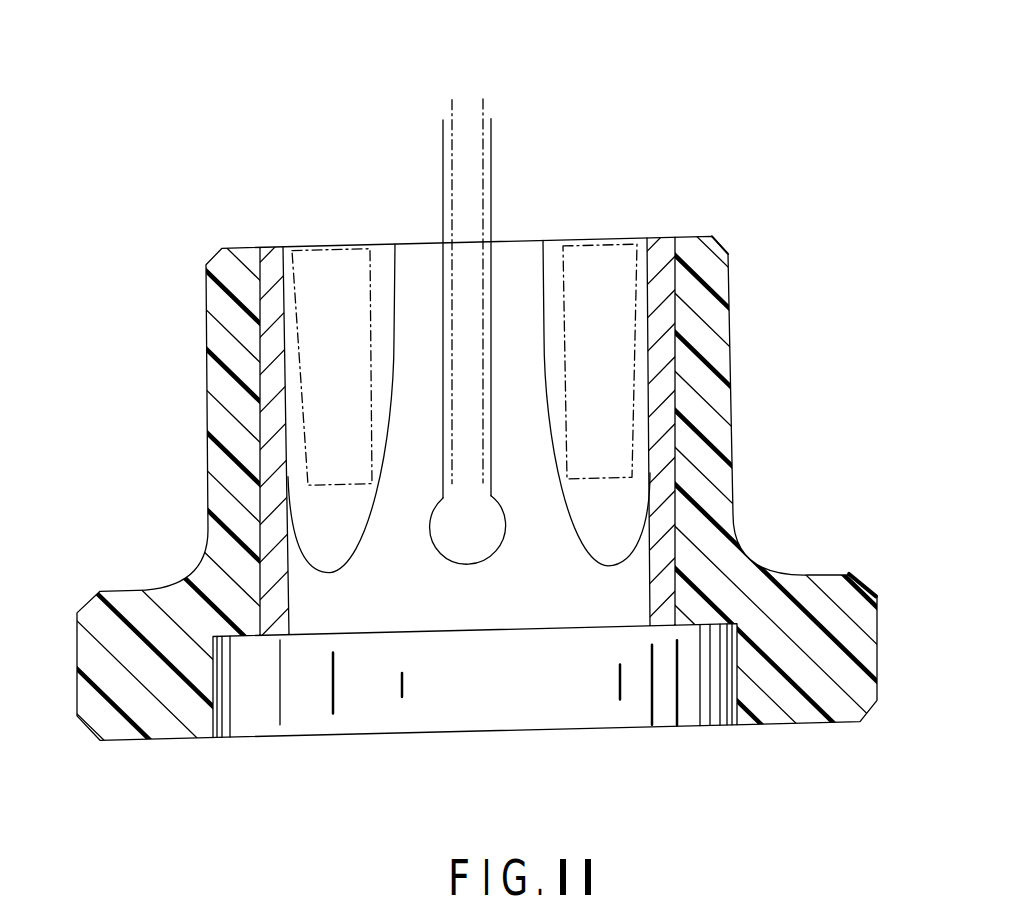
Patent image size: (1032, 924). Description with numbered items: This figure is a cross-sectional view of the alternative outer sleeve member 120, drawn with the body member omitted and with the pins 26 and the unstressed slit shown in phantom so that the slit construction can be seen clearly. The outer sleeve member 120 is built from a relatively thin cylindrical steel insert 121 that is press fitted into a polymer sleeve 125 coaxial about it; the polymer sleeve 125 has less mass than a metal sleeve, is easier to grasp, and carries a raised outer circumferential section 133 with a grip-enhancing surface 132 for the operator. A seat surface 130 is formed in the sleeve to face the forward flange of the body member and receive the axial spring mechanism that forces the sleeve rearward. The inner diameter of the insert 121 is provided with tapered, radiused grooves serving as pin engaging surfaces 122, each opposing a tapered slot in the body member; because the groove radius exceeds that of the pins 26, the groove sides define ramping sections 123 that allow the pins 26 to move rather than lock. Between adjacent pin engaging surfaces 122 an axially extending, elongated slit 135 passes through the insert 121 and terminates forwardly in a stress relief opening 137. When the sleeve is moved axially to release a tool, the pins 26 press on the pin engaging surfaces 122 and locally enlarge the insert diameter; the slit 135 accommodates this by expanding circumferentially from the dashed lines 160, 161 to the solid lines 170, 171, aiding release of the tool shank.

The outer sleeve member 120 is at (756, 97).
The cylindrical steel insert 121 is at (655, 261).
The pin engaging surface (radiused groove) 122 is at (550, 259).
The ramping sections 123 is at (673, 335).
The polymer sleeve 125 is at (708, 259).
The seat surface 130 is at (233, 629).
The grip-enhancing surface 132 is at (877, 680).
The raised outer circumferential section 133 is at (802, 580).
The elongated slit 135 is at (462, 396).
The stress relief opening 137 is at (474, 562).
The dashed line (unstressed slit width) 160 is at (452, 106).
The dashed line (unstressed slit width) 161 is at (483, 106).
The solid line (expanded slit width) 170 is at (492, 150).
The solid line (expanded slit width) 171 is at (443, 167).
The pins 26 is at (330, 266).